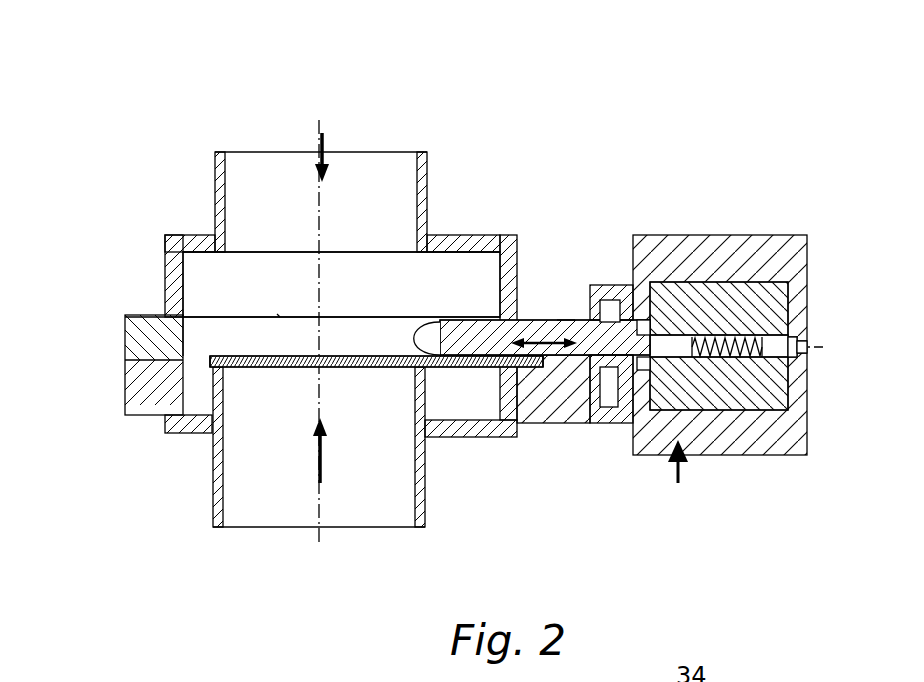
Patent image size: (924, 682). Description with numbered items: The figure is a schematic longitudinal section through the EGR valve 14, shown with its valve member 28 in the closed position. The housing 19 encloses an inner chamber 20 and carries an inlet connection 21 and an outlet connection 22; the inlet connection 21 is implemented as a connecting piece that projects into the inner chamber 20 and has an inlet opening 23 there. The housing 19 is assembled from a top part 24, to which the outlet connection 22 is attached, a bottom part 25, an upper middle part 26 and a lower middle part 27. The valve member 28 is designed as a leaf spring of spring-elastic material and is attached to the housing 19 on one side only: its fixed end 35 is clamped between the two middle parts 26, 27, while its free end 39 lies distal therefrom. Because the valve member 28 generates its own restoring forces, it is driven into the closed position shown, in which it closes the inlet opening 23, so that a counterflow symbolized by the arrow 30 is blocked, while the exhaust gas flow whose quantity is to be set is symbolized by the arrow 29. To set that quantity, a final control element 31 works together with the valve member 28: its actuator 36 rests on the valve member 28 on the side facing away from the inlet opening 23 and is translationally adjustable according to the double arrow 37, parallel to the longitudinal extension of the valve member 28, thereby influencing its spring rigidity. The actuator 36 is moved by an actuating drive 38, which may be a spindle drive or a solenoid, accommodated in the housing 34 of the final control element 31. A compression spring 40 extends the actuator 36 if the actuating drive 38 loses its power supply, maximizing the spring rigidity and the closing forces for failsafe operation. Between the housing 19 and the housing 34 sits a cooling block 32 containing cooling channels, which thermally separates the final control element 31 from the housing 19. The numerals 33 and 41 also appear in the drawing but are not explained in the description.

The EGR valve 14 is at (690, 133).
The housing 19 is at (162, 246).
The inner chamber 20 is at (383, 300).
The inlet connection 21 is at (421, 490).
The outlet connection 22 is at (430, 182).
The inlet opening 23 is at (212, 367).
The top part 24 is at (538, 338).
The bottom part 25 is at (182, 432).
The upper middle part 26 is at (557, 275).
The lower middle part 27 is at (546, 400).
The valve member 28 is at (277, 314).
The arrow 29 is at (325, 465).
The arrow 30 is at (328, 153).
The final control element 31 is at (674, 483).
The cooling block 32 is at (610, 290).
The lower clamp part 33 is at (610, 395).
The housing of the final control element 34 is at (733, 247).
The fixed end 35 is at (527, 368).
The actuator 36 is at (458, 342).
The double arrow 37 is at (563, 322).
The actuating drive 38 is at (767, 303).
The free end 39 is at (210, 379).
The compression spring 40 is at (737, 340).
The plate end 41 is at (218, 390).